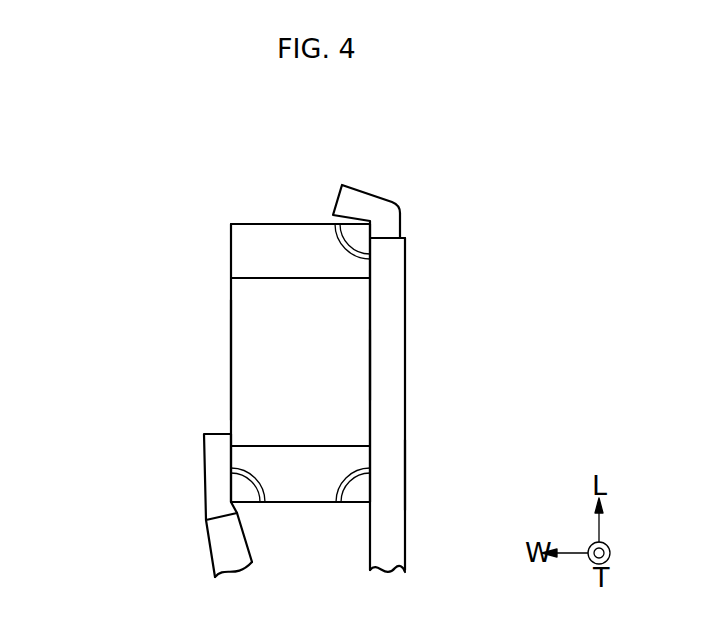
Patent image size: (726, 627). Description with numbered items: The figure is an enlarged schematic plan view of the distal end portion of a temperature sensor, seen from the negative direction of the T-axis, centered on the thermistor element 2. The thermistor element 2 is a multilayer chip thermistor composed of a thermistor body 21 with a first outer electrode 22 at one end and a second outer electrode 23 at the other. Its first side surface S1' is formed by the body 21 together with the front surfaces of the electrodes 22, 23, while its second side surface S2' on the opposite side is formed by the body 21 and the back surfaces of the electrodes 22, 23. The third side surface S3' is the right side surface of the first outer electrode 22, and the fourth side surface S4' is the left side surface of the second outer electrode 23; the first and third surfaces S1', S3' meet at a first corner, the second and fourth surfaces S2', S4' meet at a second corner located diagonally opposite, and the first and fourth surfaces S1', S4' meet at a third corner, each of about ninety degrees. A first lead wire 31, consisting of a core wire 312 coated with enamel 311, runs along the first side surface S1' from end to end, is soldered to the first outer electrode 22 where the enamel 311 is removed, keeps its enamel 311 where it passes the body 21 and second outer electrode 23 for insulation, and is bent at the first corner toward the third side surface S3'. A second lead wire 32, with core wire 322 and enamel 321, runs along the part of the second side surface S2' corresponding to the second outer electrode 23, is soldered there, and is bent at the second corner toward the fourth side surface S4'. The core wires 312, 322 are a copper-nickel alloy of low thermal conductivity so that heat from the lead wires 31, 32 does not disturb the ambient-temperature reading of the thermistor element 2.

The thermistor element 2 is at (93, 203).
The thermistor body 21 is at (207, 295).
The first outer electrode 22 is at (207, 237).
The second outer electrode 23 is at (272, 518).
The first lead wire 31 is at (427, 307).
The enamel 311 is at (405, 473).
The core wire 312 is at (400, 216).
The second lead wire 32 is at (123, 502).
The enamel 321 is at (213, 547).
The core wire 322 is at (203, 468).
The first side surface S1' is at (421, 365).
The second side surface S2' is at (180, 360).
The third side surface S3' is at (270, 188).
The fourth side surface S4' is at (315, 540).